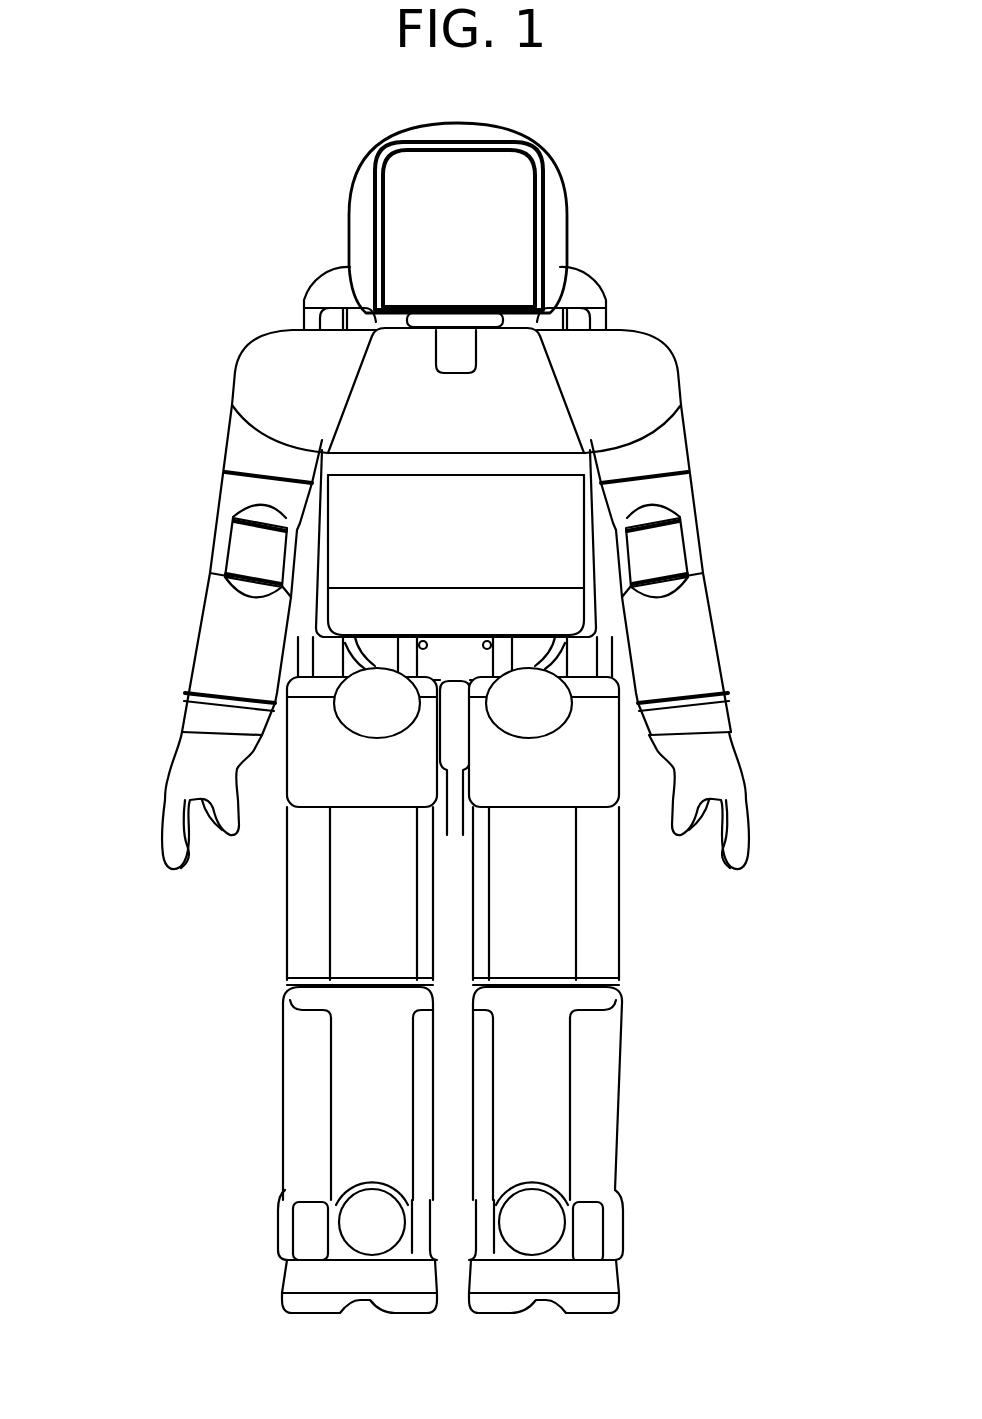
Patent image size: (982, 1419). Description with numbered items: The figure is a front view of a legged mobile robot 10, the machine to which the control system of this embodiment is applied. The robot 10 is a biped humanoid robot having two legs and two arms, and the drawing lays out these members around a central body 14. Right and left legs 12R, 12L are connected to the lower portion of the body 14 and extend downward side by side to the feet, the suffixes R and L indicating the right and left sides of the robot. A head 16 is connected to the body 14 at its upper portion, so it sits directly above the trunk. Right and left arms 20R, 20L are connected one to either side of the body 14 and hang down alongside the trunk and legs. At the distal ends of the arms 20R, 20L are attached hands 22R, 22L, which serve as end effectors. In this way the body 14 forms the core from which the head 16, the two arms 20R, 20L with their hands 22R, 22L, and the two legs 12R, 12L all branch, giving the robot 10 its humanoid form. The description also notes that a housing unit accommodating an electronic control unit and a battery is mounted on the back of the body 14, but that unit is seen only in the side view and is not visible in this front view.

The legged mobile robot 10 is at (631, 273).
The right leg 12R is at (228, 1000).
The left leg 12L is at (663, 1000).
The body 14 is at (557, 568).
The head 16 is at (513, 141).
The right arm 20R is at (192, 447).
The left arm 20L is at (710, 438).
The right hand 22R is at (182, 787).
The left hand 22L is at (722, 768).